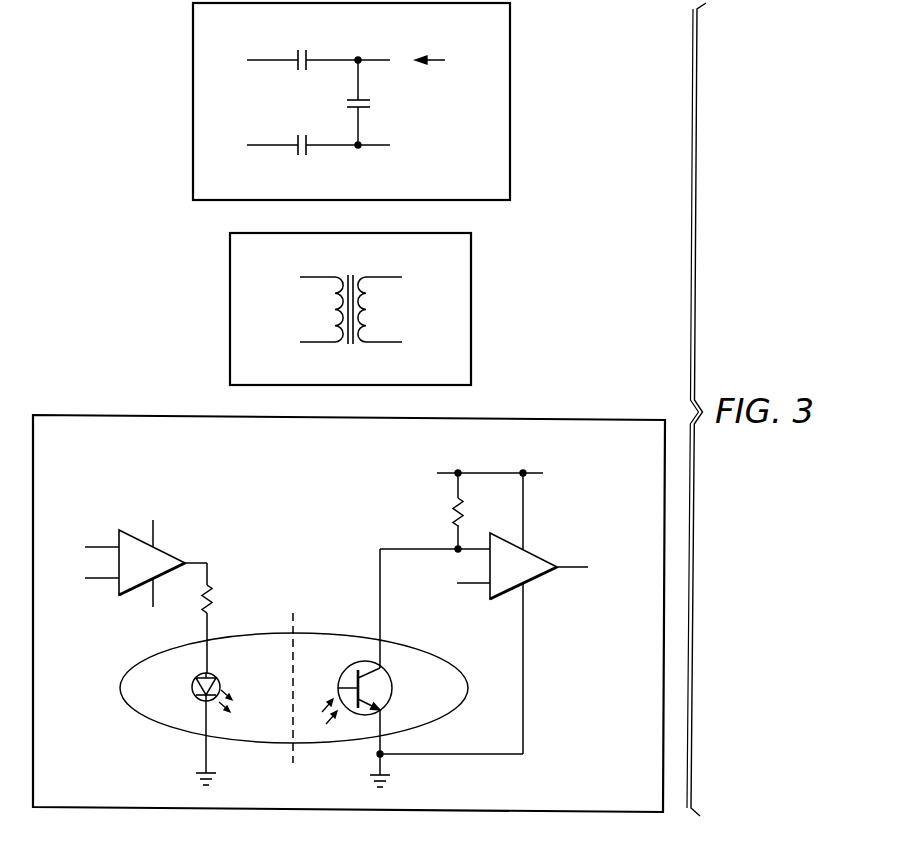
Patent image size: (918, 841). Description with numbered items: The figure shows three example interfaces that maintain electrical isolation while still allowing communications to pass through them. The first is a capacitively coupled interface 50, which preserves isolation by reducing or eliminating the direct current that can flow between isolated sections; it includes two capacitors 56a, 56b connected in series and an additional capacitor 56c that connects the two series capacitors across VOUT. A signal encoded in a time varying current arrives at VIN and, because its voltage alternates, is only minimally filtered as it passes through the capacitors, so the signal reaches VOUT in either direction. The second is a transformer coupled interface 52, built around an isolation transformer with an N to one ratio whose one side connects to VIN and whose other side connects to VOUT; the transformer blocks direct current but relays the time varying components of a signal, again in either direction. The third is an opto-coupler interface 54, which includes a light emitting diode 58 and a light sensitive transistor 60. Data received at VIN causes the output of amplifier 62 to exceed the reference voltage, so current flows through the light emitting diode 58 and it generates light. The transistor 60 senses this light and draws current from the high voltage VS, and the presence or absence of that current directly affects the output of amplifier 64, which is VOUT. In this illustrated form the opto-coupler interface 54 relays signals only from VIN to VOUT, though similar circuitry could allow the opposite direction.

The capacitively coupled interface 50 is at (319, 101).
The transformer coupled interface 52 is at (481, 289).
The opto-coupler interface 54 is at (138, 410).
The capacitor 56a is at (309, 54).
The capacitor 56b is at (309, 150).
The capacitor 56c is at (349, 90).
The light emitting diode 58 is at (190, 686).
The light sensitive transistor 60 is at (393, 688).
The amplifier 62 is at (170, 553).
The amplifier 64 is at (541, 578).